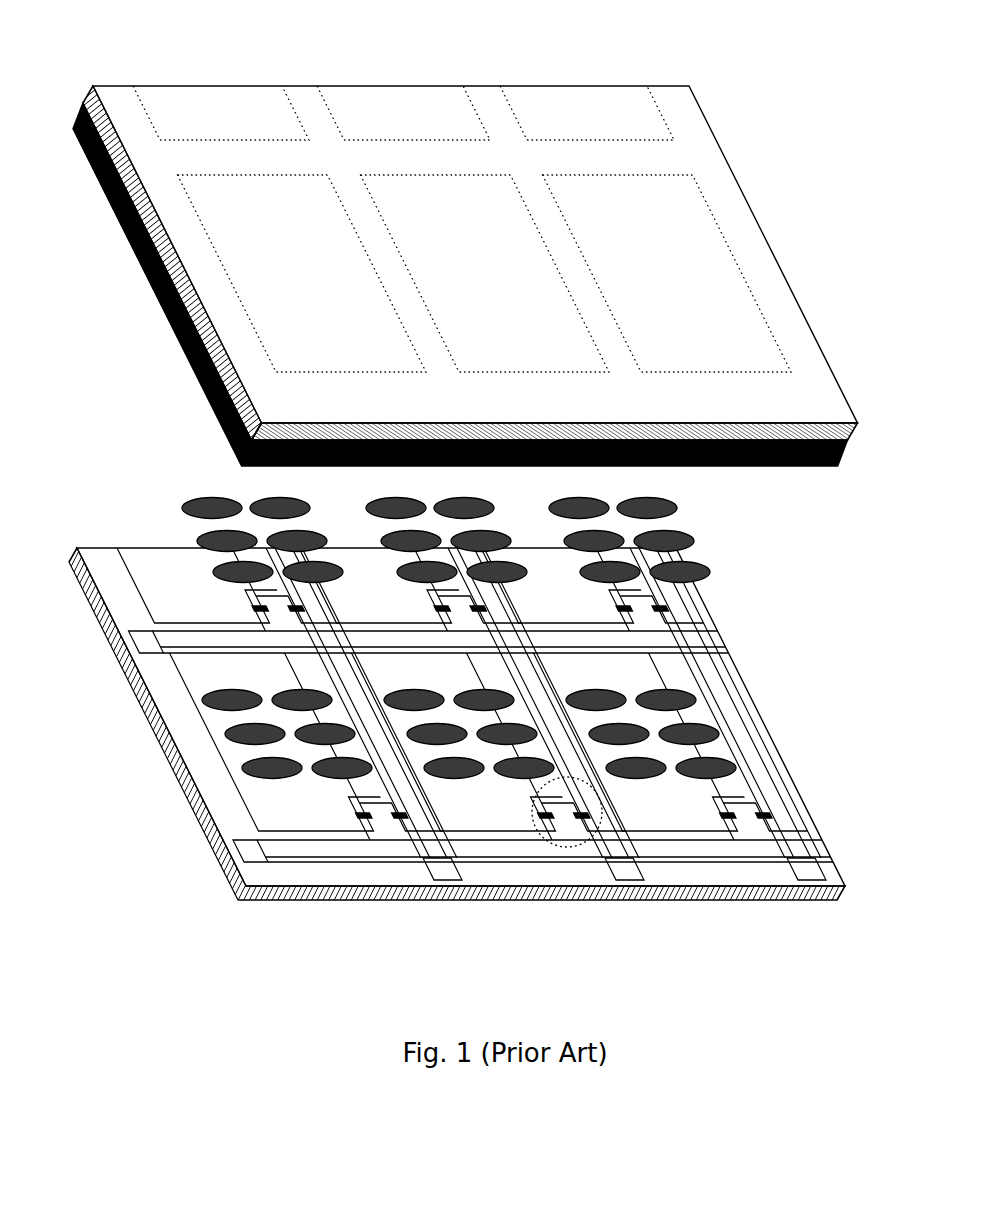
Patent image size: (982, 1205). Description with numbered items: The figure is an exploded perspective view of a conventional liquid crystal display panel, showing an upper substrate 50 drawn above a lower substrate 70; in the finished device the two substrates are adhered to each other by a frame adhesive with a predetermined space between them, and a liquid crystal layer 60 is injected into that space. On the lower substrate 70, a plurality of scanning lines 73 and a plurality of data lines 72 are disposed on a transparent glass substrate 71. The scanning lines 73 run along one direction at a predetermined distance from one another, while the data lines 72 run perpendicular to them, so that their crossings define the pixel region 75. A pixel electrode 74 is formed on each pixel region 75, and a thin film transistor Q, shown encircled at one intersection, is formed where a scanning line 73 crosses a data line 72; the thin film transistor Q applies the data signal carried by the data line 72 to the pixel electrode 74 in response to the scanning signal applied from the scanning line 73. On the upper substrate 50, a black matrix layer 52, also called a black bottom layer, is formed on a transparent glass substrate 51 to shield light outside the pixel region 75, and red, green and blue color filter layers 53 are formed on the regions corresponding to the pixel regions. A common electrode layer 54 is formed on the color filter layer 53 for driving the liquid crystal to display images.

The upper substrate 50 is at (326, 66).
The transparent glass substrate 51 is at (92, 87).
The black matrix layer 52 is at (703, 153).
The color filter layer 53 is at (707, 270).
The common electrode layer 54 is at (187, 362).
The liquid crystal layer 60 is at (185, 507).
The lower substrate 70 is at (416, 908).
The transparent glass substrate 71 is at (303, 899).
The data line 72 is at (443, 873).
The scanning line 73 is at (268, 848).
The pixel electrode 74 is at (262, 797).
The pixel region 75 is at (197, 706).
The thin film transistor Q is at (572, 848).